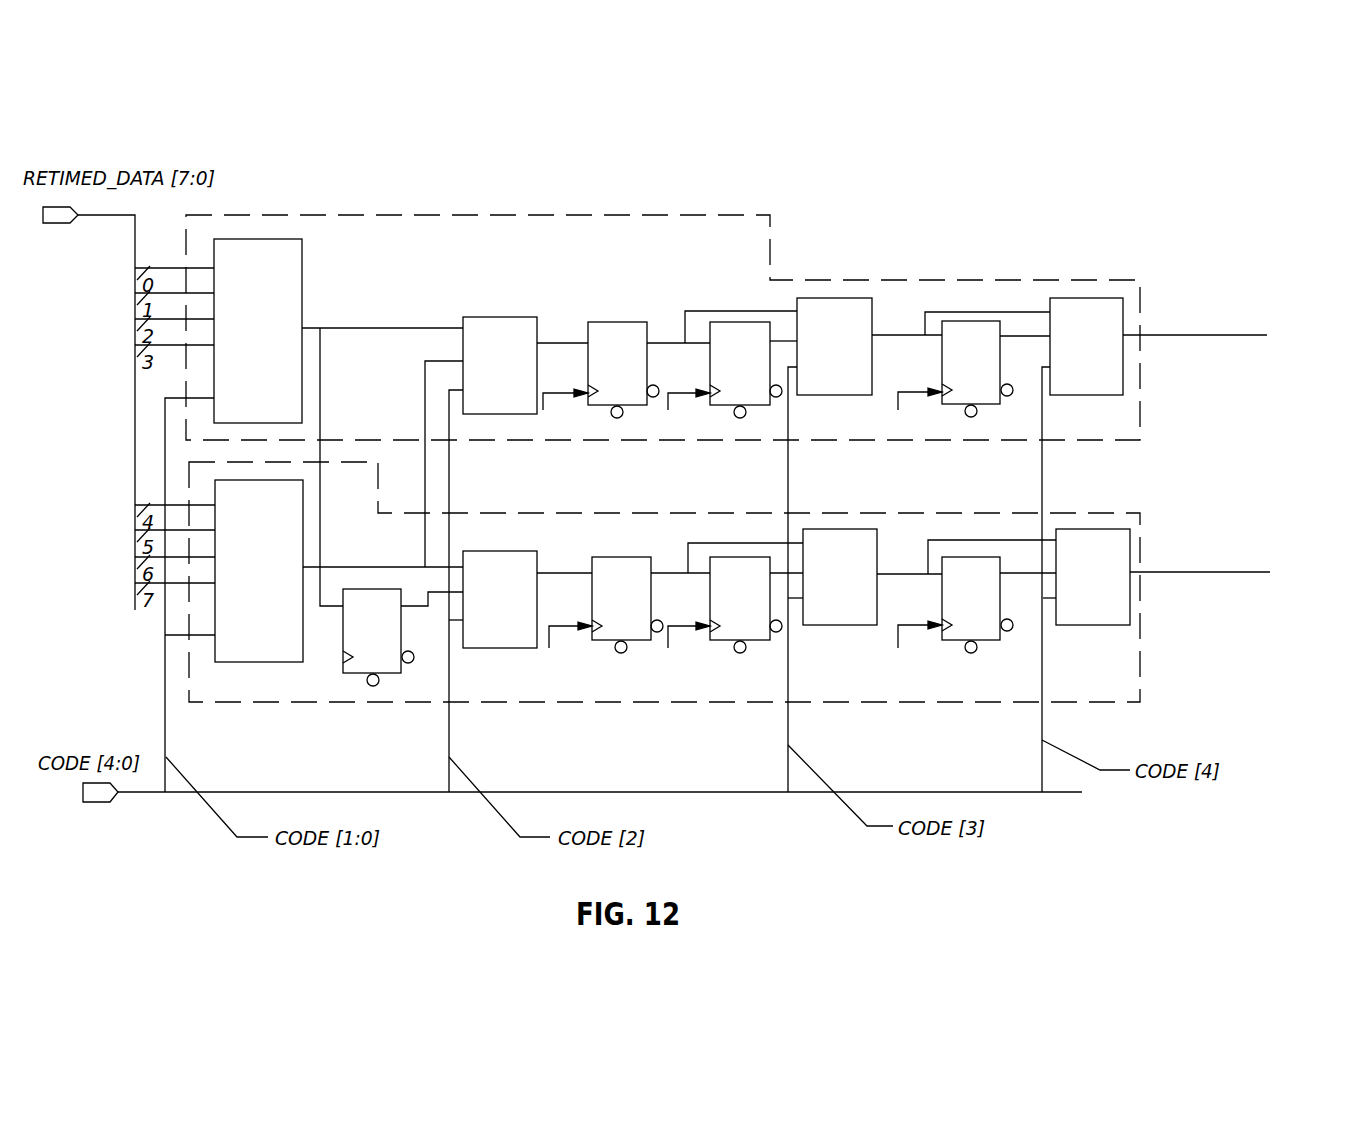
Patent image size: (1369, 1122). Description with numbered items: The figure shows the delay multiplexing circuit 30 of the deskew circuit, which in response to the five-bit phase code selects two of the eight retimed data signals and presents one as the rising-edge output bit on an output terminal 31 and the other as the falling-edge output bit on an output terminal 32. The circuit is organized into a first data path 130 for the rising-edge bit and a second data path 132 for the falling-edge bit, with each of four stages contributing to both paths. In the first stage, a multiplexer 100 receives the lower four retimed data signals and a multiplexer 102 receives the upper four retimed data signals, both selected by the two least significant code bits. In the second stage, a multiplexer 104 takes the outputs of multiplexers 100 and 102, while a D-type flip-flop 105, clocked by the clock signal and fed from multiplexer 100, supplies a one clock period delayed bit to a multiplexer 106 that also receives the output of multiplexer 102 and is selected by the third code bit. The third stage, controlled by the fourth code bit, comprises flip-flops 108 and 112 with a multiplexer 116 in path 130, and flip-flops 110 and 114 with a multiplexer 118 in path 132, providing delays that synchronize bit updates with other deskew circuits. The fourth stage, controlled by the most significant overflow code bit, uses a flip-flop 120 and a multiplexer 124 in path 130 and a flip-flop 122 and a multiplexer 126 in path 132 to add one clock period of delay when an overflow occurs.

The delay multiplexing circuit 30 is at (992, 199).
The output terminal 31 is at (1243, 344).
The output terminal 32 is at (1248, 582).
The multiplexer 100 is at (308, 331).
The multiplexer 102 is at (321, 563).
The multiplexer 104 is at (518, 345).
The D-type flip-flop 105 is at (343, 645).
The multiplexer 106 is at (531, 568).
The D-type flip-flop 108 is at (604, 355).
The D-type flip-flop 110 is at (607, 582).
The D-type flip-flop 112 is at (745, 341).
The D-type flip-flop 114 is at (713, 567).
The multiplexer 116 is at (864, 323).
The multiplexer 118 is at (861, 554).
The D-type flip-flop 120 is at (967, 344).
The D-type flip-flop 122 is at (956, 579).
The multiplexer 124 is at (1116, 319).
The multiplexer 126 is at (1114, 555).
The first data path 130 is at (663, 306).
The second data path 132 is at (664, 606).